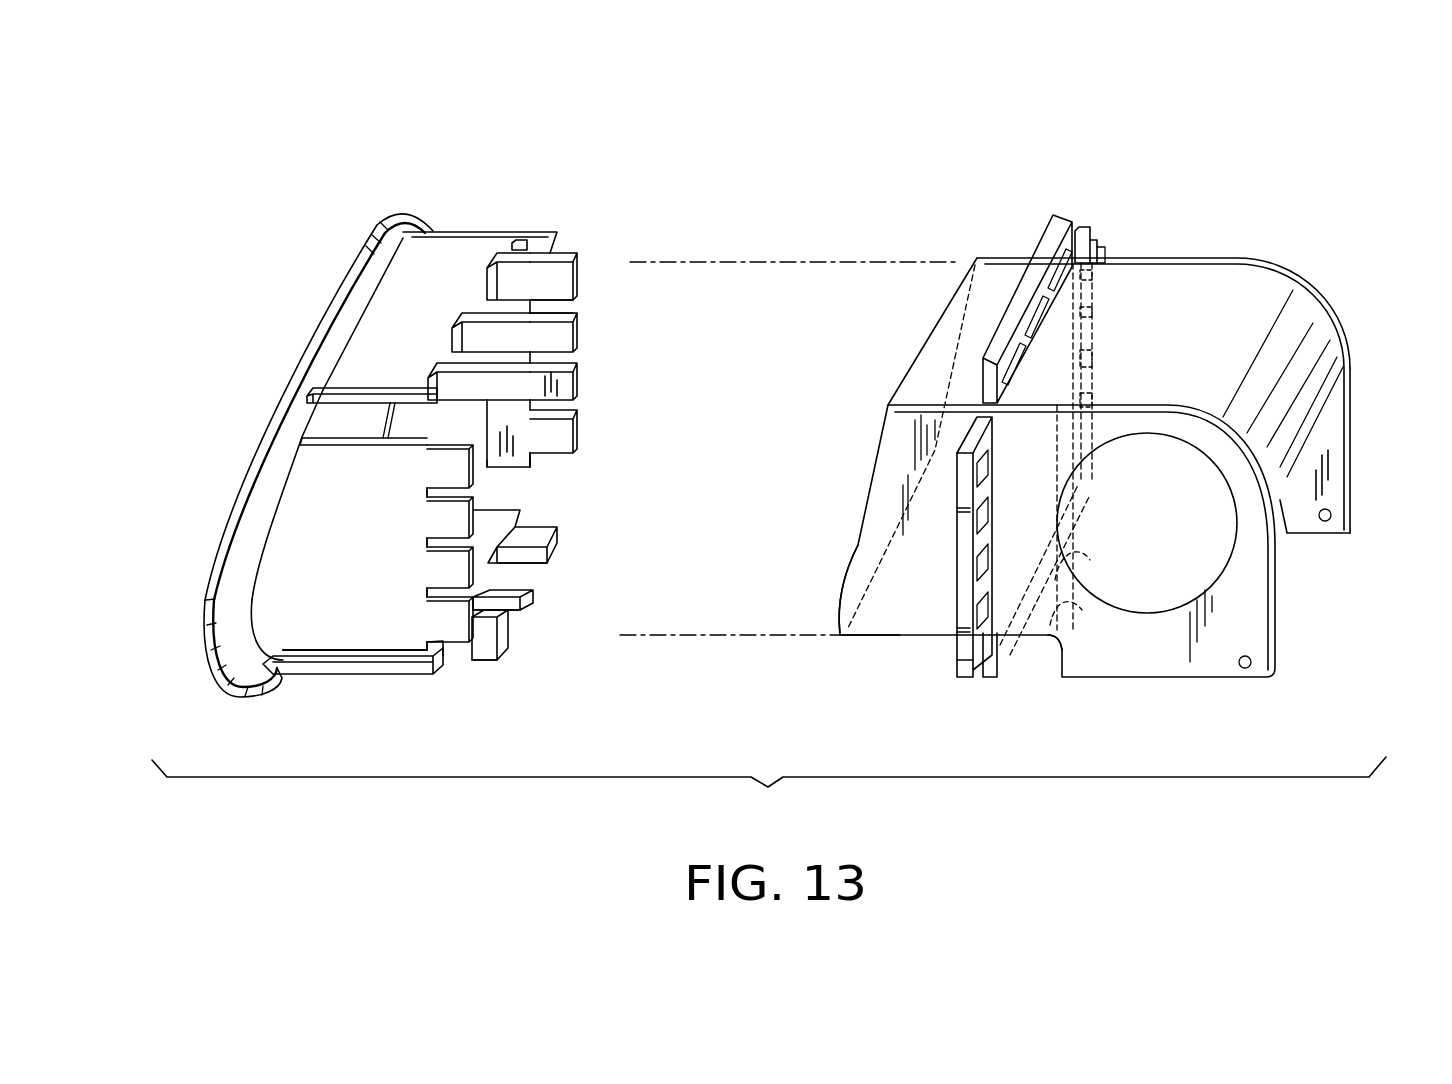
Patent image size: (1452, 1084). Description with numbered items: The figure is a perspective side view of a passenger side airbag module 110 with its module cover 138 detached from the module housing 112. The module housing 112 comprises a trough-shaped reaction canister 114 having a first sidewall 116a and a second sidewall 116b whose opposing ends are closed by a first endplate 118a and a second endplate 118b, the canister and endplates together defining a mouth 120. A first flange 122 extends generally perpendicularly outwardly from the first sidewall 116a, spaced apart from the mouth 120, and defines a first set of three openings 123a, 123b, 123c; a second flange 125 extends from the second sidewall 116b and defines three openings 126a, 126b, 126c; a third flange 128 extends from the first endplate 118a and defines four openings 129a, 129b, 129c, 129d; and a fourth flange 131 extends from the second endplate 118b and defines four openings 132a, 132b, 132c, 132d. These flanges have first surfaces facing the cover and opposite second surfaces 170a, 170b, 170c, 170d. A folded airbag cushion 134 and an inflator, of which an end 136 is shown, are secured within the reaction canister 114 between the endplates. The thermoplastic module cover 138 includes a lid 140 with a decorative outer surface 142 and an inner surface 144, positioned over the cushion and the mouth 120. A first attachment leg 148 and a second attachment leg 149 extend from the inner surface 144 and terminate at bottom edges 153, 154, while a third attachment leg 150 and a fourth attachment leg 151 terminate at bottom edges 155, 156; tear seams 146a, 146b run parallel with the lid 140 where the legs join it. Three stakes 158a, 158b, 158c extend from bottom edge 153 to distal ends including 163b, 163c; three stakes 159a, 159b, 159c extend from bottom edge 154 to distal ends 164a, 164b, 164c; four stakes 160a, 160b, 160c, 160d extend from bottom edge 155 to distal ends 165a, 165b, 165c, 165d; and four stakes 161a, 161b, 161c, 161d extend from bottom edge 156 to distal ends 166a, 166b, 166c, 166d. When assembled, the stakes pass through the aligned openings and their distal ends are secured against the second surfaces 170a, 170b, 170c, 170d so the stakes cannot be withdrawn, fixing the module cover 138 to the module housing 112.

The passenger side airbag module 110 is at (920, 148).
The module housing 112 is at (1323, 287).
The reaction canister 114 is at (1350, 395).
The first sidewall 116a is at (1233, 280).
The second sidewall 116b is at (880, 553).
The first endplate 118a is at (1273, 643).
The second endplate 118b is at (1353, 455).
The mouth 120 is at (882, 468).
The first flange 122 is at (1060, 214).
The opening 123a is at (1002, 352).
The opening 123b is at (1030, 310).
The opening 123c is at (1053, 253).
The second flange 125 is at (980, 683).
The opening 126a is at (1062, 655).
The opening 126b is at (1055, 618).
The opening 126c is at (1078, 557).
The third flange 128 is at (957, 568).
The opening 129a is at (987, 466).
The opening 129b is at (990, 502).
The opening 129c is at (990, 548).
The opening 129d is at (990, 600).
The fourth flange 131 is at (1092, 242).
The opening 132a is at (1092, 270).
The opening 132b is at (1093, 318).
The opening 132c is at (1095, 368).
The opening 132d is at (1098, 403).
The airbag cushion 134 is at (836, 603).
The end of the inflator 136 is at (1220, 547).
The module cover 138 is at (335, 282).
The lid 140 is at (397, 210).
The decorative outer surface 142 is at (243, 468).
The inner surface 144 is at (262, 686).
The tear seam 146a is at (258, 570).
The tear seam 146b is at (340, 350).
The first attachment leg 148 is at (420, 242).
The second attachment leg 149 is at (353, 680).
The third attachment leg 150 is at (263, 610).
The fourth attachment leg 151 is at (488, 466).
The bottom edge 153 is at (523, 240).
The bottom edge 154 is at (450, 662).
The bottom edge 155 is at (432, 440).
The bottom edge 156 is at (537, 458).
The stake 158a is at (447, 358).
The stake 158b is at (470, 310).
The stake 158c is at (497, 262).
The stake 159a is at (493, 657).
The stake 159b is at (513, 612).
The stake 159c is at (537, 567).
The stake 160a is at (427, 472).
The stake 160b is at (427, 522).
The stake 160c is at (427, 572).
The stake 160d is at (427, 622).
The stake 161a is at (580, 302).
The stake 161b is at (580, 352).
The stake 161c is at (580, 402).
The stake 161d is at (580, 452).
The distal end 163b is at (543, 307).
The distal end 163c is at (540, 300).
The distal end 164a is at (513, 633).
The distal end 164b is at (533, 593).
The distal end 164c is at (557, 540).
The distal end 165a is at (470, 480).
The distal end 165b is at (470, 530).
The distal end 165c is at (470, 580).
The distal end 165d is at (470, 630).
The distal end 166a is at (580, 283).
The distal end 166b is at (580, 332).
The distal end 166c is at (580, 382).
The distal end 166d is at (580, 432).
The second surface 170a is at (1075, 228).
The second surface 170b is at (1003, 667).
The second surface 170c is at (975, 677).
The second surface 170d is at (1093, 243).